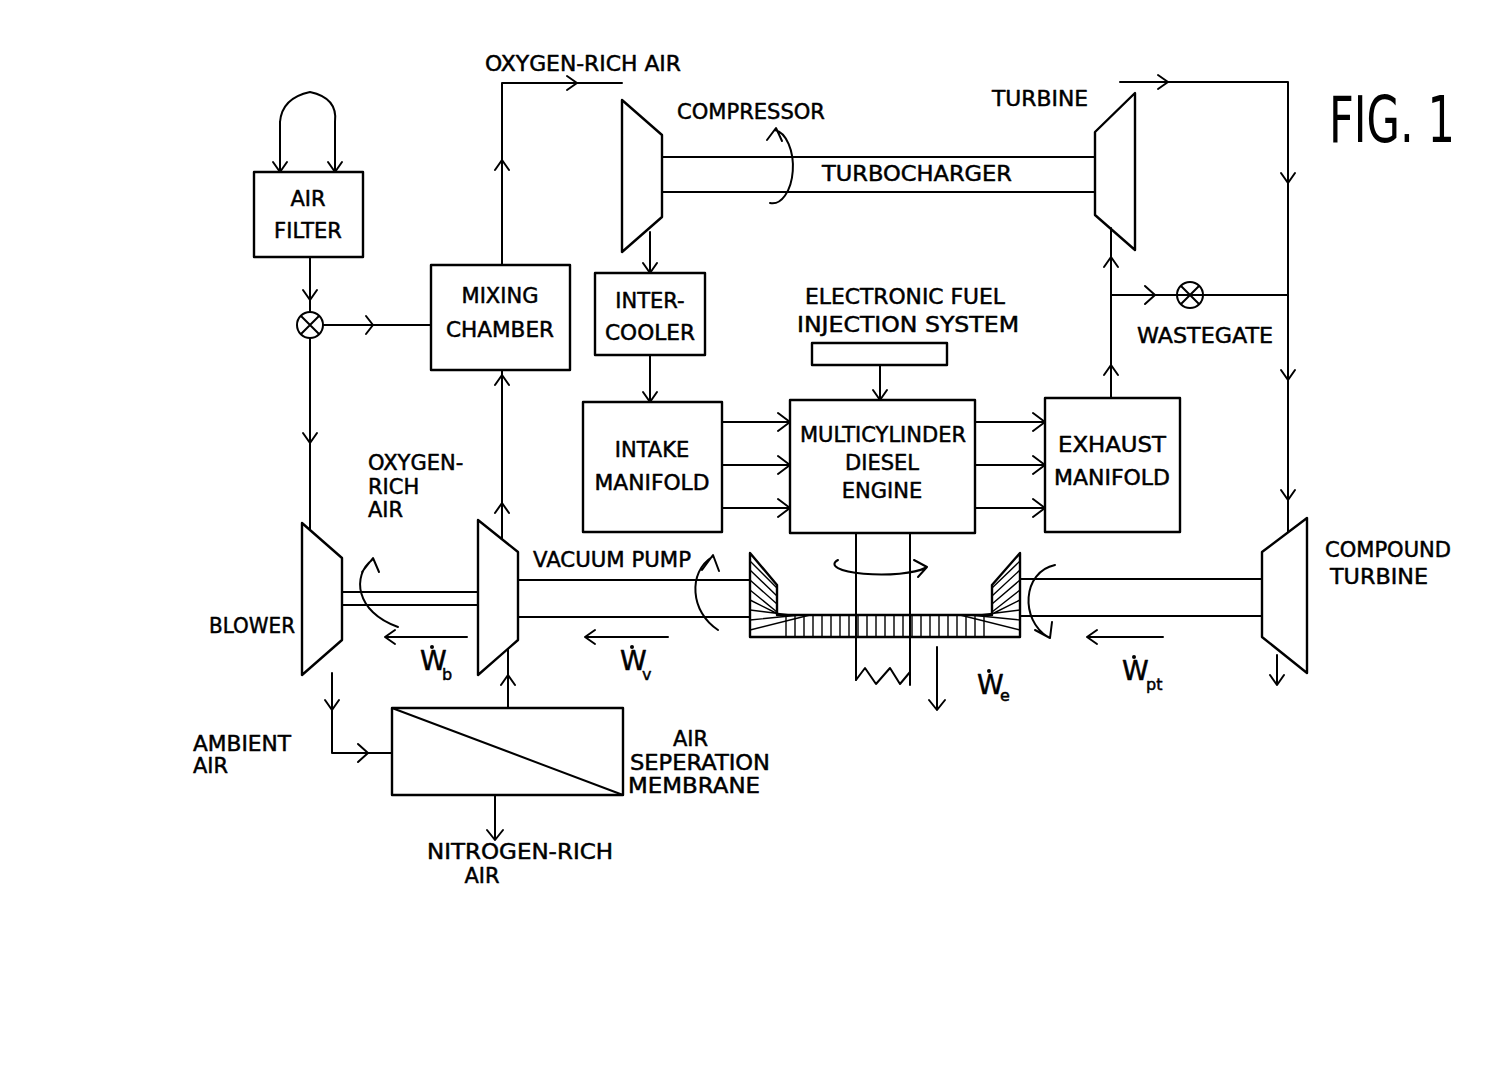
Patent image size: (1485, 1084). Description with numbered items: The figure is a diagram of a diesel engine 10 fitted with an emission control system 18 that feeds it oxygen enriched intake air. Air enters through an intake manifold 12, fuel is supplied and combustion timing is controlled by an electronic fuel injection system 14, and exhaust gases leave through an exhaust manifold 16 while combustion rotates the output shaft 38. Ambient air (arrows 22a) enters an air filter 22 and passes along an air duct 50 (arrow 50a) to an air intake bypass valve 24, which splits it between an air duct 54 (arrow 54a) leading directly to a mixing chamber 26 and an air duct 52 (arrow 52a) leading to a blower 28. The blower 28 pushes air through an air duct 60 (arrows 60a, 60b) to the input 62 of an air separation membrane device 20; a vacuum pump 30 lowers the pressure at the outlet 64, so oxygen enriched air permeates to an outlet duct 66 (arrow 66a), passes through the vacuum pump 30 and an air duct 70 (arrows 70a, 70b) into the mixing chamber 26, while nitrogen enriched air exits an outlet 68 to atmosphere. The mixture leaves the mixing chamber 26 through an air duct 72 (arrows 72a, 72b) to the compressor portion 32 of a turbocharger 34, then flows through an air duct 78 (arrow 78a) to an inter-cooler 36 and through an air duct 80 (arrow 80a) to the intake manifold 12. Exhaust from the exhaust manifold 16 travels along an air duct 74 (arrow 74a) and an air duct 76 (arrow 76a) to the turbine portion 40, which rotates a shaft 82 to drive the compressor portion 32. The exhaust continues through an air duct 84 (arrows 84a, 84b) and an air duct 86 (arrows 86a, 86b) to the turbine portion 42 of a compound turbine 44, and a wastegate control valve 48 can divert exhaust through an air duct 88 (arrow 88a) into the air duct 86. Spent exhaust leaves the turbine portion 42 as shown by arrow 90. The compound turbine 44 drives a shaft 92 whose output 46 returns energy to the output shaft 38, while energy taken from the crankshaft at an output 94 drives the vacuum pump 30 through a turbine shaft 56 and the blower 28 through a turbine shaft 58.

The diesel engine 10 is at (975, 405).
The intake manifold 12 is at (722, 402).
The electronic fuel injection system 14 is at (947, 348).
The exhaust manifold 16 is at (1180, 460).
The emission control system 18 is at (428, 128).
The air separation membrane device 20 is at (618, 795).
The air filter 22 is at (363, 200).
The arrows 22a is at (307, 118).
The air intake bypass valve 24 is at (298, 332).
The mixing chamber 26 is at (455, 265).
The blower 28 is at (323, 534).
The vacuum pump 30 is at (476, 544).
The compressor portion 32 is at (660, 112).
The turbocharger 34 is at (909, 162).
The inter-cooler 36 is at (705, 298).
The output shaft 38 is at (862, 664).
The turbine portion 40 is at (1137, 165).
The turbine portion 42 is at (1307, 620).
The compound turbine 44 is at (1221, 634).
The output 46 is at (1018, 640).
The wastegate control valve 48 is at (1202, 305).
The air duct 50 is at (308, 268).
The arrow 50a is at (317, 300).
The air duct 52 is at (307, 395).
The arrow 52a is at (305, 442).
The air duct 54 is at (338, 332).
The arrow 54a is at (375, 338).
The turbine shaft 56 is at (680, 638).
The turbine shaft 58 is at (396, 590).
The air duct 60 is at (305, 673).
The arrow 60a is at (340, 698).
The arrow 60b is at (365, 758).
The input 62 is at (388, 758).
The outlet 64 is at (506, 706).
The outlet duct 66 is at (510, 655).
The arrow 66a is at (510, 685).
The outlet 68 is at (500, 798).
The air duct 70 is at (505, 455).
The arrow 70a is at (508, 505).
The arrow 70b is at (505, 388).
The air duct 72 is at (505, 203).
The arrow 72a is at (508, 160).
The arrow 72b is at (573, 88).
The air duct 74 is at (1113, 378).
The arrow 74a is at (1108, 365).
The air duct 76 is at (1108, 270).
The arrow 76a is at (1103, 257).
The air duct 78 is at (653, 232).
The arrow 78a is at (660, 272).
The air duct 80 is at (648, 385).
The arrow 80a is at (665, 395).
The shaft 82 is at (985, 195).
The air duct 84 is at (1228, 88).
The arrow 84a is at (1168, 90).
The arrow 84b is at (1283, 180).
The air duct 86 is at (1284, 345).
The arrow 86a is at (1284, 378).
The arrow 86b is at (1284, 500).
The air duct 88 is at (1143, 292).
The arrow 88a is at (1175, 288).
The arrow 90 is at (1287, 683).
The shaft 92 is at (1155, 583).
The output 94 is at (762, 640).